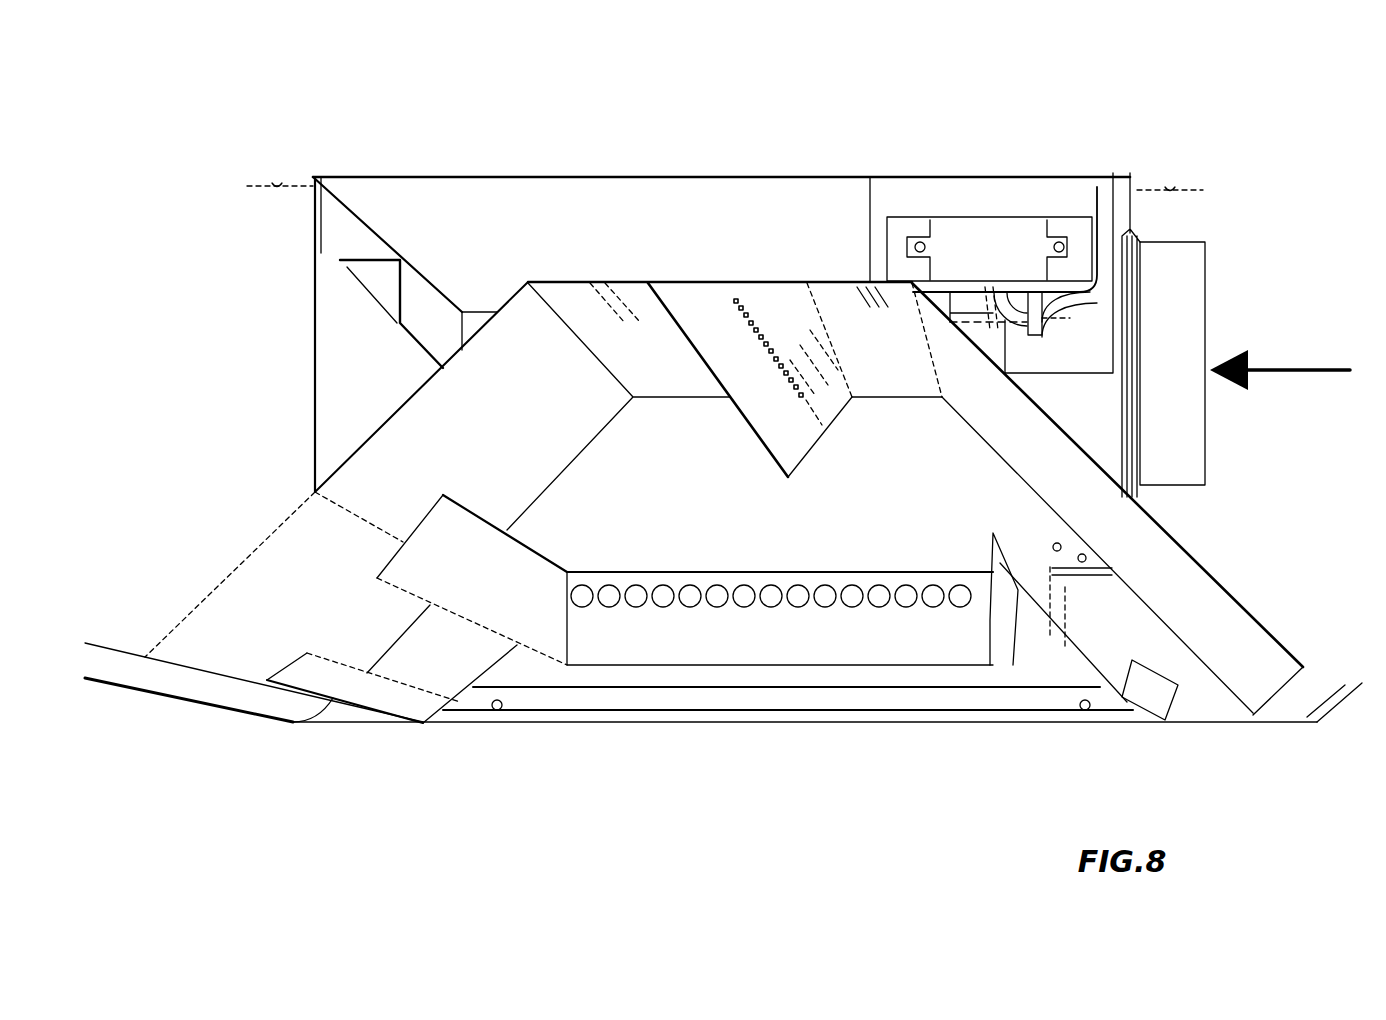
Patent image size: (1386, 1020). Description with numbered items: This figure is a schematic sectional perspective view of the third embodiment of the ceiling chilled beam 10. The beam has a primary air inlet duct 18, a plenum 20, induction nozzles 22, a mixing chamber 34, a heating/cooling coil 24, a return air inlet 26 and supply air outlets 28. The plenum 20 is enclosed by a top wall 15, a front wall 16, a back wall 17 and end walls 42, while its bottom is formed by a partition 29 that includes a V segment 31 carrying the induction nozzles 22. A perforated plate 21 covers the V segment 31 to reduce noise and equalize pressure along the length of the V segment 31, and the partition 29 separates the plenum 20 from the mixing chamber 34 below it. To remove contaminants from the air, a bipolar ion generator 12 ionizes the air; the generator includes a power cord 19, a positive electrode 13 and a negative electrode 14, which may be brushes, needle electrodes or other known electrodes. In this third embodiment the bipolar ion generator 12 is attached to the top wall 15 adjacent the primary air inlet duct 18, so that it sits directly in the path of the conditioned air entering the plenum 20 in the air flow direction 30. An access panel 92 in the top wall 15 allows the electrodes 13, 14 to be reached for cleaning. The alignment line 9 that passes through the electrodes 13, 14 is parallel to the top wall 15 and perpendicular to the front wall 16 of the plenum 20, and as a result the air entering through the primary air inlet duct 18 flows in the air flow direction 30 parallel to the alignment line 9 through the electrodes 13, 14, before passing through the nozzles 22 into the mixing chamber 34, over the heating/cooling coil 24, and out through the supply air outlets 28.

The alignment line 9 is at (980, 325).
The ceiling chilled beam 10 is at (397, 132).
The bipolar ion generator 12 is at (1003, 227).
The positive electrode 13 is at (1003, 227).
The negative electrode 14 is at (1107, 303).
The top wall 15 is at (692, 203).
The front wall 16 is at (1137, 213).
The back wall 17 is at (345, 358).
The primary air inlet duct 18 is at (1173, 470).
The power cord 19 is at (1100, 290).
The plenum 20 is at (582, 236).
The perforated plate 21 is at (747, 282).
The induction nozzles 22 is at (777, 355).
The heating/cooling coil 24 is at (767, 600).
The return air inlet 26 is at (923, 727).
The supply air outlets 28 is at (225, 663).
The partition 29 is at (437, 407).
The air flow direction 30 is at (1298, 370).
The V segment 31 is at (825, 412).
The mixing chamber 34 is at (654, 506).
The end walls 42 is at (473, 312).
The access panel 92 is at (947, 293).